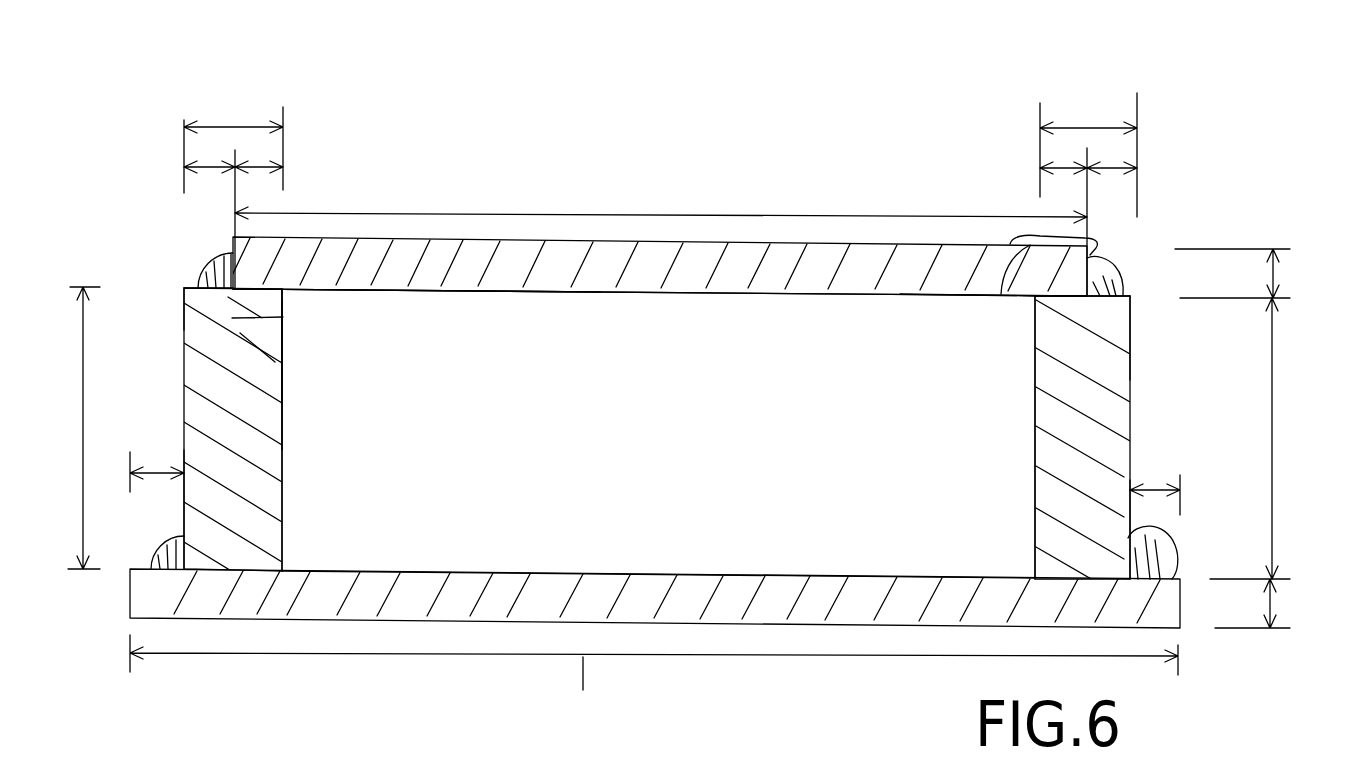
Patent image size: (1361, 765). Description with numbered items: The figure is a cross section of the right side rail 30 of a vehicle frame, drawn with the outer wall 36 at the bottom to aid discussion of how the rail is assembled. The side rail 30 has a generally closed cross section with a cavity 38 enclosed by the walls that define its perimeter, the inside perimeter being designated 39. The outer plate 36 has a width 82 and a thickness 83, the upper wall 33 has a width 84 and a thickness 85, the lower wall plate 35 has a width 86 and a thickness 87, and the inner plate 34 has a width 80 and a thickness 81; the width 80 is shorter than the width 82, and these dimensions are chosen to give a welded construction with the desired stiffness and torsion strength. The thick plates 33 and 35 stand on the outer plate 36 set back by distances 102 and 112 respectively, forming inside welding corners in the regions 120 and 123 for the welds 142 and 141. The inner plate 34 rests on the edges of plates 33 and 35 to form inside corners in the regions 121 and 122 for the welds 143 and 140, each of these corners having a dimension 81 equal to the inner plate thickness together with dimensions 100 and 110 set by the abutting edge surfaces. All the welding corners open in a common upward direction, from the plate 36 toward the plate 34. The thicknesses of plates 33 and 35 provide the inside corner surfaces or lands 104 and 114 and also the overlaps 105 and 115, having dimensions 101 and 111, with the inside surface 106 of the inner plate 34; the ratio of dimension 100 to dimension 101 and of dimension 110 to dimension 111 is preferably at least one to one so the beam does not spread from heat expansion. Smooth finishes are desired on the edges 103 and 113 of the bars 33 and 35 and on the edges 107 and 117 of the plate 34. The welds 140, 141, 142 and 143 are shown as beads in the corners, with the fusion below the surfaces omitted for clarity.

The right side rail 30 is at (827, 297).
The right side rail upper wall 33 is at (262, 413).
The right side rail inner wall 34 is at (585, 290).
The lower wall plate 35 is at (1122, 377).
The right side rail outer wall 36 is at (548, 583).
The cavity 38 is at (892, 456).
The inside perimeter 39 is at (827, 578).
The width of inner plate 80 is at (620, 212).
The thickness of inner plate 81 is at (1285, 270).
The width of outer plate 82 is at (654, 683).
The thickness of outer plate 83 is at (1280, 602).
The width of upper wall 84 is at (88, 380).
The thickness of upper wall 85 is at (227, 127).
The width of lower wall plate 86 is at (1273, 410).
The thickness of lower wall plate 87 is at (1087, 128).
The dimension of inside welding corner 100 is at (208, 175).
The dimension of overlap 101 is at (260, 172).
The set back distance 102 is at (163, 468).
The edge of upper wall 103 is at (187, 288).
The inside corner surface or land 104 is at (193, 287).
The overlap 105 is at (283, 318).
The inside surface of inner plate 106 is at (468, 292).
The edge of inner plate 107 is at (232, 239).
The dimension of inside welding corner 110 is at (1103, 173).
The dimension of overlap 111 is at (1055, 175).
The set back distance 112 is at (1155, 488).
The edge of lower wall 113 is at (1127, 282).
The inside corner surface or land 114 is at (1140, 298).
The overlap 115 is at (1073, 297).
The edge of inner plate 117 is at (1010, 288).
The inside welding corner 120 is at (193, 537).
The inside welding corner 121 is at (283, 363).
The inside welding corner 122 is at (1113, 260).
The inside welding corner 123 is at (1170, 535).
The weld 140 is at (1130, 276).
The weld 141 is at (1174, 552).
The weld 142 is at (173, 537).
The weld 143 is at (212, 266).